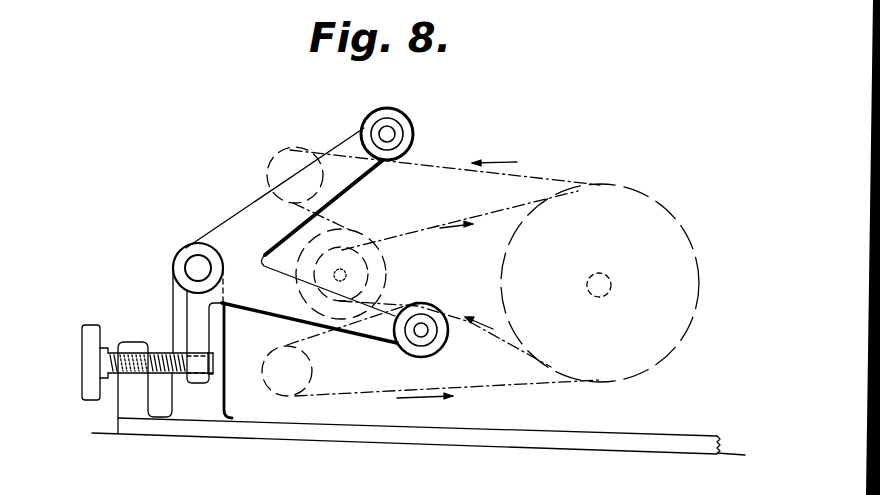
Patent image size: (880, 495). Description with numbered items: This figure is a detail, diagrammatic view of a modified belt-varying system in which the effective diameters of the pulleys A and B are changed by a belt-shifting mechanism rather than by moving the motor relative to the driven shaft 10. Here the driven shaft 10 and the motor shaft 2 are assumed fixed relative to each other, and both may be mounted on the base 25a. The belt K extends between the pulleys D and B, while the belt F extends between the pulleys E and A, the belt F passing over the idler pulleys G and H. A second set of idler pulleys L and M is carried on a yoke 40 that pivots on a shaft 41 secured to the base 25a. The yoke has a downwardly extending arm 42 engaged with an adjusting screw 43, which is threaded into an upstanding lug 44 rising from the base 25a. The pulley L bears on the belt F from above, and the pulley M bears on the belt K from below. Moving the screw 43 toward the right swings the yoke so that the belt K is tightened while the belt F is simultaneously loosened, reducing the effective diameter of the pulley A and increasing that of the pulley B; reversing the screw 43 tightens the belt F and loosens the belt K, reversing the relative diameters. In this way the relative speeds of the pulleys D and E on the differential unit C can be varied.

The motor shaft 2 is at (344, 264).
The driven shaft 10 is at (600, 297).
The base 25a is at (347, 439).
The yoke 40 is at (248, 212).
The shaft 41 is at (186, 268).
The downwardly extending arm 42 is at (202, 338).
The adjusting screw 43 is at (162, 352).
The upstanding lug 44 is at (122, 400).
The pulley A is at (385, 255).
The pulley B is at (368, 275).
The differential unit C is at (667, 207).
The pulley D is at (690, 238).
The pulley E is at (724, 248).
The belt F is at (548, 172).
The idler pulley G is at (280, 155).
The idler pulley H is at (312, 371).
The belt K is at (506, 210).
The idler pulley L is at (412, 135).
The idler pulley M is at (440, 350).